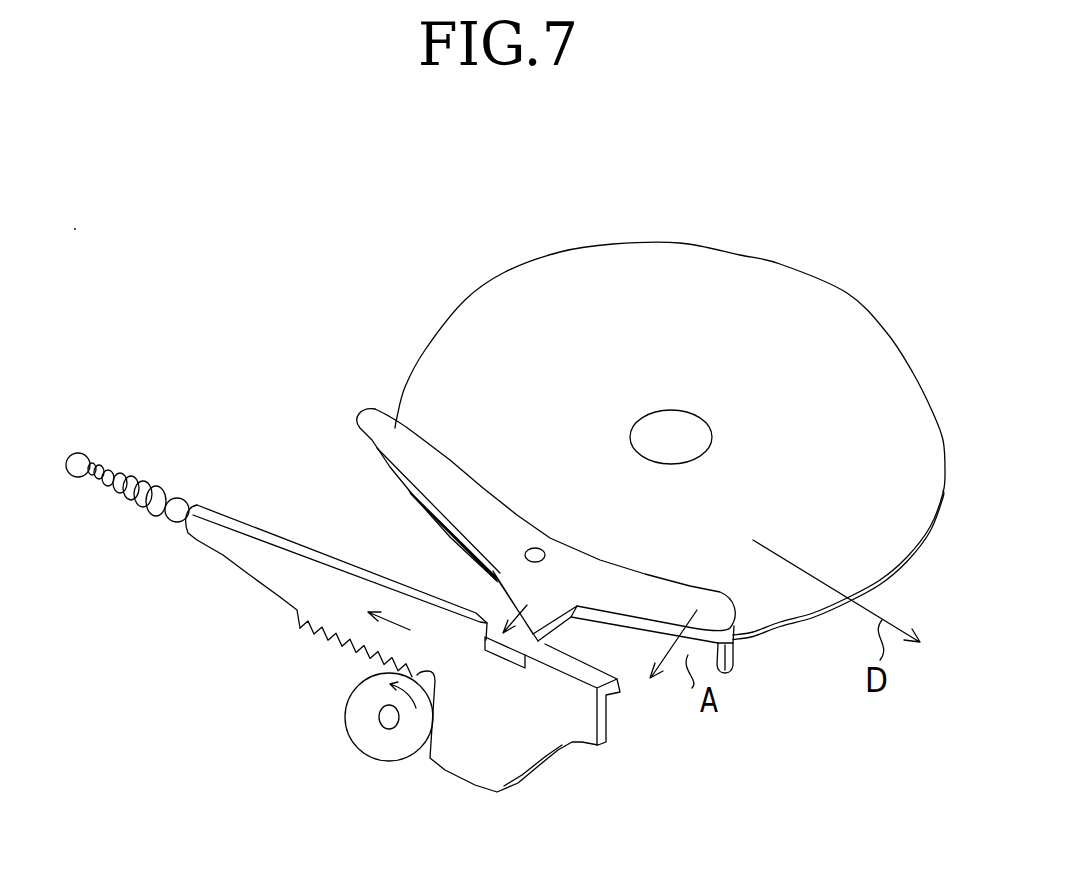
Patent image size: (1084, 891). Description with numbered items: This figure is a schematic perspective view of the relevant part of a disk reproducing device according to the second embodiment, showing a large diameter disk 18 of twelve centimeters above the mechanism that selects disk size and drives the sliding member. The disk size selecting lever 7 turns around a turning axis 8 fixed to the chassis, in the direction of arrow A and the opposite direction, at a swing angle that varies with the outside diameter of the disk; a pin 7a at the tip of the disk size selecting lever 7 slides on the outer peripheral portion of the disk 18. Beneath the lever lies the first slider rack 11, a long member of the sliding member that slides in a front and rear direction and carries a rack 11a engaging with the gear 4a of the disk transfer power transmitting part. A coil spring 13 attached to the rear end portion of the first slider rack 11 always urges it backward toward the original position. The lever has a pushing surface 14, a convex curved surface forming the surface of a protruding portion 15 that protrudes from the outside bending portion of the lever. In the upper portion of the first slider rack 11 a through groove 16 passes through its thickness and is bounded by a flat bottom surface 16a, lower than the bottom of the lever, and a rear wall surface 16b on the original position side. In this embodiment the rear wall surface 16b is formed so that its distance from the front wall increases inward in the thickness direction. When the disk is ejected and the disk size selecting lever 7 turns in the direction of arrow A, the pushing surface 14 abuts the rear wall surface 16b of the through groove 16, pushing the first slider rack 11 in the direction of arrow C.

The large diameter disk 18 is at (883, 365).
The disk size selecting lever 7 is at (605, 507).
The pin 7a is at (733, 652).
The turning axis 8 is at (540, 547).
The coil spring 13 is at (140, 473).
The first slider rack 11 is at (321, 611).
The rack 11a is at (320, 647).
The gear 4a is at (368, 740).
The pushing surface 14 is at (495, 598).
The protruding portion 15 is at (558, 615).
The through groove 16 is at (530, 747).
The flat bottom surface 16a is at (512, 657).
The rear wall surface 16b is at (495, 655).